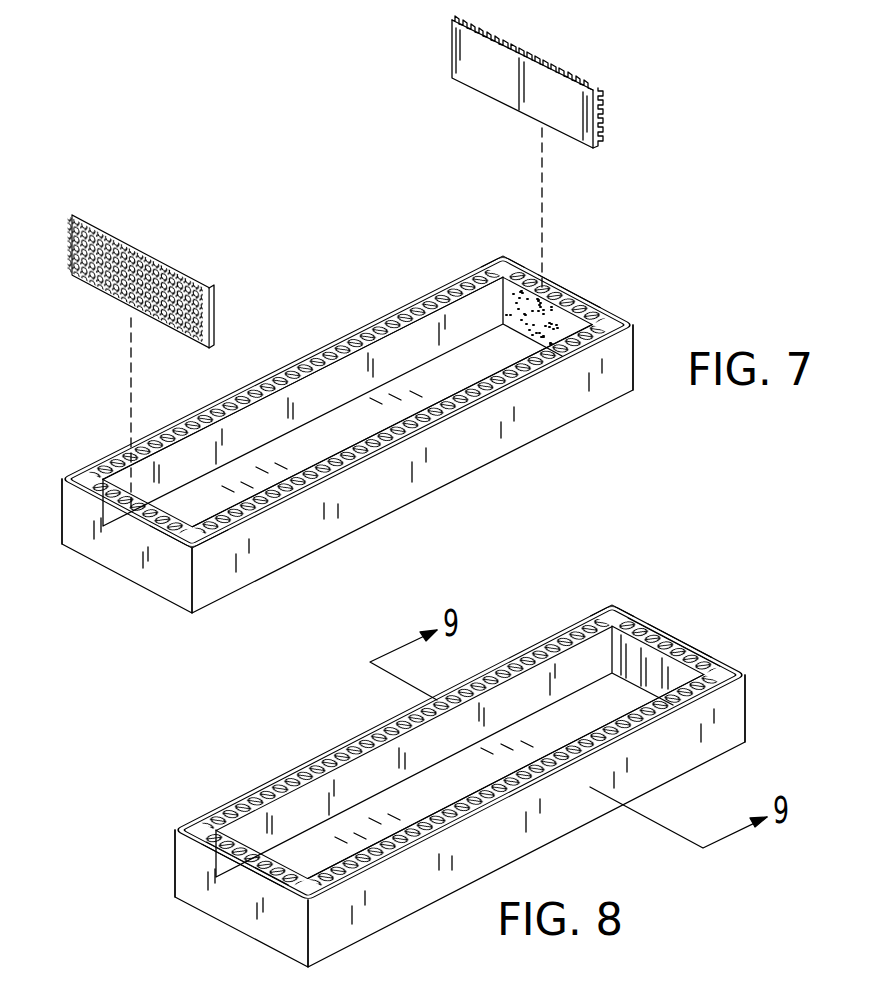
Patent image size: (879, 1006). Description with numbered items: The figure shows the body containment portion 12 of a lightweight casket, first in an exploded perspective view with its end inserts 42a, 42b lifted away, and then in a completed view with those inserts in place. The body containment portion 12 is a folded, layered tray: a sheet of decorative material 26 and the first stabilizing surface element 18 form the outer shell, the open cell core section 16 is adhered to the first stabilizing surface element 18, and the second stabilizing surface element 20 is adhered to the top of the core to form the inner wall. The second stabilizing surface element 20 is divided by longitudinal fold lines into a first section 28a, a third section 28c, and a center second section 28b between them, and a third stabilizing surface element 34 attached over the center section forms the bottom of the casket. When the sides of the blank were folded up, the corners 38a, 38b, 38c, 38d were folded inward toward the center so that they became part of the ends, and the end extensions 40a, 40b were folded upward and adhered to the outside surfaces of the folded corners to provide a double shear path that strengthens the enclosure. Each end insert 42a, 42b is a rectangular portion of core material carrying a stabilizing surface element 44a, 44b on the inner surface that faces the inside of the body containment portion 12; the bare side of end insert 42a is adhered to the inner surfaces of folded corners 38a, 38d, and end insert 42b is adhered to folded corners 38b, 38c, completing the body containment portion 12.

In FIG. 7, the body containment portion 12 is at (580, 403).
In FIG. 8, the body containment portion 12 is at (727, 742).
In FIG. 7, the open cell core section 16 is at (502, 388).
In FIG. 8, the open cell core section 16 is at (597, 748).
In FIG. 7, the first stabilizing surface element 18 is at (137, 566).
In FIG. 7, the second stabilizing surface element 20 is at (270, 458).
In FIG. 7, the sheet of decorative material 26 is at (432, 470).
In FIG. 8, the sheet of decorative material 26 is at (568, 830).
In FIG. 7, the first section 28a is at (345, 448).
In FIG. 8, the first section 28a is at (457, 810).
In FIG. 7, the center second section 28b is at (521, 347).
In FIG. 7, the third section 28c is at (345, 360).
In FIG. 8, the third section 28c is at (360, 778).
In FIG. 7, the third stabilizing surface element 34 is at (438, 382).
In FIG. 8, the third stabilizing surface element 34 is at (530, 740).
In FIG. 7, the corner 38a is at (187, 548).
In FIG. 8, the corner 38a is at (268, 895).
In FIG. 7, the corner 38b is at (603, 320).
In FIG. 8, the corner 38b is at (718, 668).
In FIG. 7, the corner 38c is at (508, 258).
In FIG. 8, the corner 38c is at (637, 610).
In FIG. 7, the corner 38d is at (103, 478).
In FIG. 8, the corner 38d is at (188, 840).
In FIG. 7, the end extension 40a is at (95, 547).
In FIG. 8, the end extension 40a is at (232, 907).
In FIG. 7, the end extension 40b is at (572, 285).
In FIG. 8, the end extension 40b is at (677, 640).
In FIG. 7, the end insert 42a is at (73, 222).
In FIG. 8, the end insert 42a is at (203, 857).
In FIG. 7, the end insert 42b is at (532, 53).
In FIG. 8, the end insert 42b is at (688, 660).
In FIG. 7, the stabilizing surface element 44a is at (146, 247).
In FIG. 8, the stabilizing surface element 44a is at (232, 808).
In FIG. 7, the stabilizing surface element 44b is at (462, 43).
In FIG. 8, the stabilizing surface element 44b is at (652, 662).